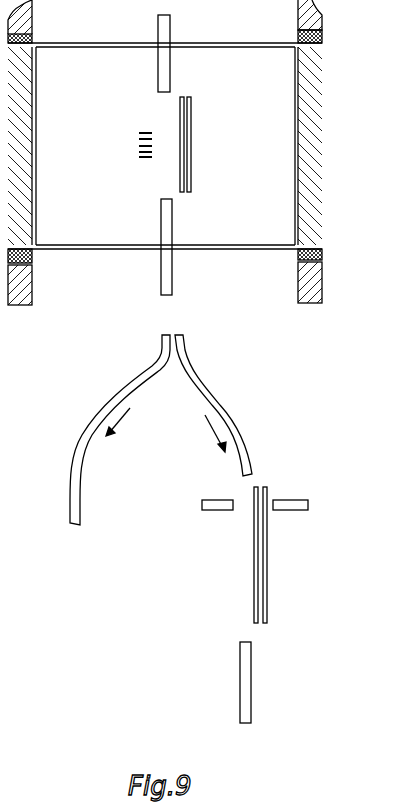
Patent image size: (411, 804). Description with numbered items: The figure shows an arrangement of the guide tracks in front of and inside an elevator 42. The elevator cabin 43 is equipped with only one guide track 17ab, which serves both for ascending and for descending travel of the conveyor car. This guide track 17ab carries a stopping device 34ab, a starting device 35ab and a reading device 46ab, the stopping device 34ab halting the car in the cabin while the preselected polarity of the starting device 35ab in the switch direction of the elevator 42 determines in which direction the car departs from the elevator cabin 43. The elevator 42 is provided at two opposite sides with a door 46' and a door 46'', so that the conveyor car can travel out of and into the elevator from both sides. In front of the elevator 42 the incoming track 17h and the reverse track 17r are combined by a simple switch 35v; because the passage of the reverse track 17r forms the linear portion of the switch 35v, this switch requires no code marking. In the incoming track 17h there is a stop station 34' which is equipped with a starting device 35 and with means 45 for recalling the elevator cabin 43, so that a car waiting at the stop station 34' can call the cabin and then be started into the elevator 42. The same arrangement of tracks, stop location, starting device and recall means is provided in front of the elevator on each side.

The elevator 42 is at (108, 88).
The elevator cabin 43 is at (90, 243).
The door 46'' is at (165, 36).
The door 46' is at (165, 255).
The guide track 17ab is at (171, 63).
The stopping device 34ab is at (164, 125).
The starting device 35ab is at (193, 147).
The reading device 46ab is at (137, 157).
The switch 35v is at (182, 321).
The reverse track 17r is at (81, 503).
The recall means 45 is at (289, 499).
The starting device 35 is at (261, 546).
The stop station 34' is at (231, 559).
The incoming track 17h is at (251, 682).